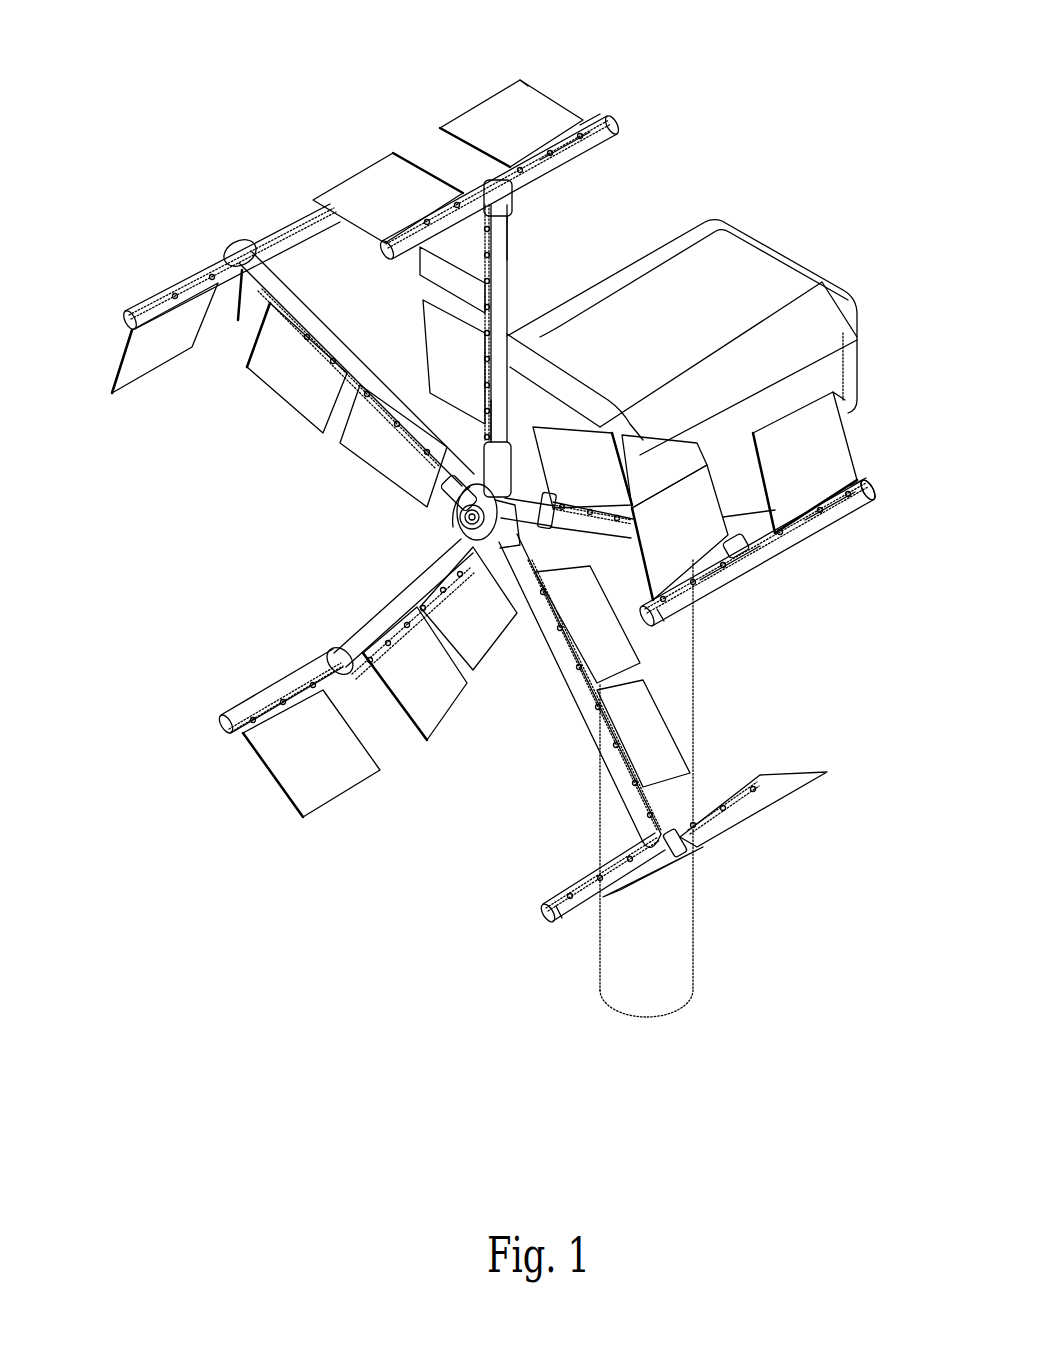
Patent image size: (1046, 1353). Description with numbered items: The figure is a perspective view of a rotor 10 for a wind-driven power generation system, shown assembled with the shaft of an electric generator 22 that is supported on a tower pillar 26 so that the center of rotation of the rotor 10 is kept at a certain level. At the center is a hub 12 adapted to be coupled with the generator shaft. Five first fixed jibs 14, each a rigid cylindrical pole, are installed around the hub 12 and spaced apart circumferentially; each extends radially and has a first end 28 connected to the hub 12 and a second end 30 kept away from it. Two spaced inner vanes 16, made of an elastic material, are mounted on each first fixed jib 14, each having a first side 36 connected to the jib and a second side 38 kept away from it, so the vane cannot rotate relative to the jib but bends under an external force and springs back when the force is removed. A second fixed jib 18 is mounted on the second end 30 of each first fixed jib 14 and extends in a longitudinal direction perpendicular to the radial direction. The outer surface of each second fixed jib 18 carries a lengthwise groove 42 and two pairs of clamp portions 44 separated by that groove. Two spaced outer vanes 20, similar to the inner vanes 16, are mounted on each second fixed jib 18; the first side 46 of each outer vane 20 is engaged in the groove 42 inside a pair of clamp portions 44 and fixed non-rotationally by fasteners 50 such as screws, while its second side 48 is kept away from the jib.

The rotor 10 is at (168, 568).
The hub 12 is at (465, 522).
The first fixed jib 14 is at (503, 263).
The inner vane 16 is at (425, 313).
The second fixed jib 18 is at (563, 163).
The outer vane 20 is at (480, 105).
The electric generator 22 is at (765, 262).
The tower pillar 26 is at (697, 937).
The first end 28 is at (483, 395).
The second end 30 is at (502, 208).
The first side 36 is at (300, 325).
The second side 38 is at (272, 386).
The groove 42 is at (680, 600).
The clamp portions 44 is at (583, 138).
The first side 46 is at (588, 118).
The second side 48 is at (522, 82).
The fasteners 50 is at (866, 492).